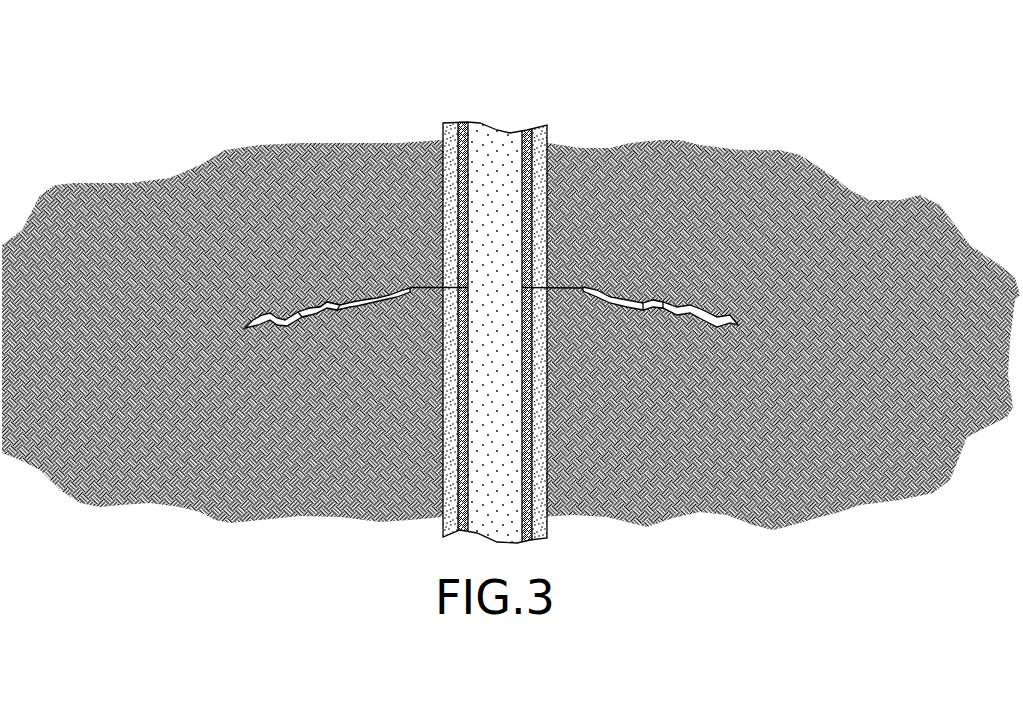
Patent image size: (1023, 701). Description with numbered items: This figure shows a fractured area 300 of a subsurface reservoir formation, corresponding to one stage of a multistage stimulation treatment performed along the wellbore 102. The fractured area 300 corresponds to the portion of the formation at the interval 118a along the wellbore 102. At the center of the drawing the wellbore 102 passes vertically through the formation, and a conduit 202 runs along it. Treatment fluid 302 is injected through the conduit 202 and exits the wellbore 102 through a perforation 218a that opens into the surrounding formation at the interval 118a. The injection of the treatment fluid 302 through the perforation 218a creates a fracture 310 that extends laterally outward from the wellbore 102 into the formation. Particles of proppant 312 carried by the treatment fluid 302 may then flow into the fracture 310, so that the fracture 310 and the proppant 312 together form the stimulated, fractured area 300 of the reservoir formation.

The fractured area 300 is at (511, 288).
The treatment fluid 302 is at (445, 288).
The wellbore 102 is at (454, 128).
The conduit 202 is at (445, 167).
The interval 118a is at (130, 254).
The perforation 218a is at (443, 283).
The fracture 310 is at (245, 328).
The proppant 312 is at (320, 317).